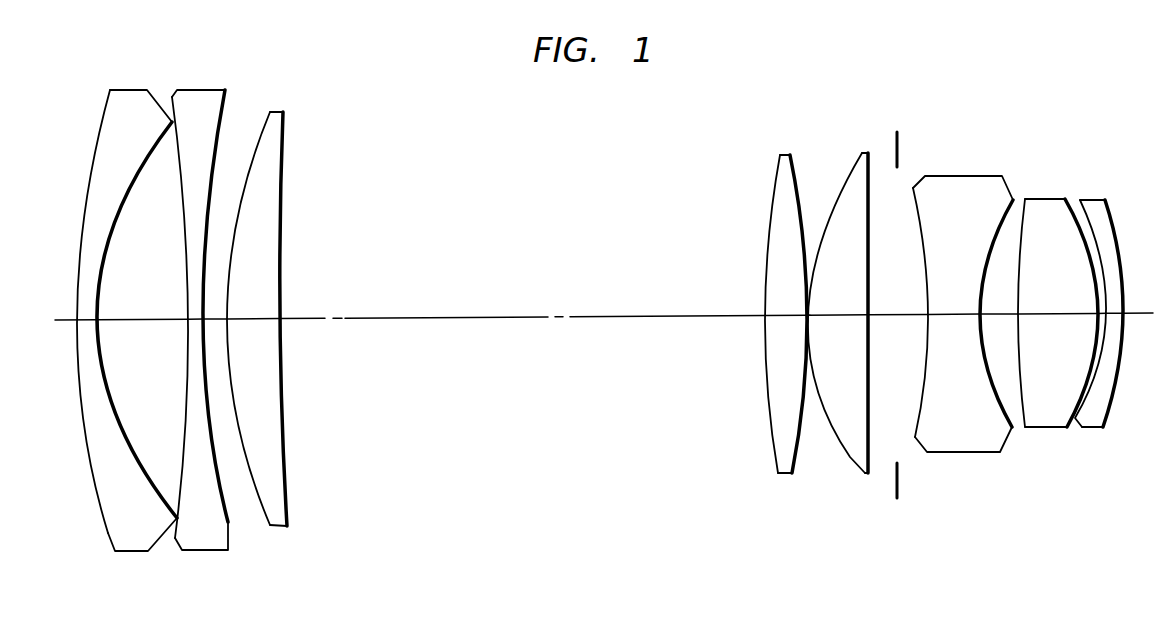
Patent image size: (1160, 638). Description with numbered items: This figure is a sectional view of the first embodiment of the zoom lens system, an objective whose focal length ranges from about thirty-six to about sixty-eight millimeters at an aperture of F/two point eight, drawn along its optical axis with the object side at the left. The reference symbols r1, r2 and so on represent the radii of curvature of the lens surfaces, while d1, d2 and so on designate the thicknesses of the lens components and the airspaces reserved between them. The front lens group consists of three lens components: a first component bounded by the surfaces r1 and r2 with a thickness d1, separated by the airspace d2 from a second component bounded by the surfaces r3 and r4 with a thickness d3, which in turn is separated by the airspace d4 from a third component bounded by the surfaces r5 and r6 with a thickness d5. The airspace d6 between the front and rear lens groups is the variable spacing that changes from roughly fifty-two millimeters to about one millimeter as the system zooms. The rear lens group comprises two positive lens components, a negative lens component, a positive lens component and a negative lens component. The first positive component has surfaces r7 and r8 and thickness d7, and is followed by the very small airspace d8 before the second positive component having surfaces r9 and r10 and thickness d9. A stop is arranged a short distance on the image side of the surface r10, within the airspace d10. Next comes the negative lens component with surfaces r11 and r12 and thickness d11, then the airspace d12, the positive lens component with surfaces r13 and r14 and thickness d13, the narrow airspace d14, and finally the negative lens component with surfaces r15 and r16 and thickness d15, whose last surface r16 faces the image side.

The thickness of first lens component d1 is at (83, 318).
The airspace between first and second lens components d2 is at (140, 318).
The thickness of second lens component d3 is at (193, 325).
The airspace between second and third lens components d4 is at (217, 325).
The thickness of third lens component d5 is at (255, 318).
The variable airspace between front and rear lens groups d6 is at (503, 317).
The thickness of fourth lens component d7 is at (785, 313).
The airspace between fourth and fifth lens components d8 is at (808, 318).
The thickness of fifth lens component d9 is at (830, 313).
The airspace between fifth and sixth lens components d10 is at (892, 313).
The thickness of sixth lens component d11 is at (950, 312).
The airspace between sixth and seventh lens components d12 is at (998, 318).
The thickness of seventh lens component d13 is at (1048, 312).
The airspace between seventh and eighth lens components d14 is at (1097, 320).
The thickness of eighth lens component d15 is at (1118, 315).
The object side surface of first lens component r1 is at (108, 533).
The image side surface of first lens component r2 is at (158, 505).
The object side surface of second lens component r3 is at (182, 503).
The image side surface of second lens component r4 is at (228, 510).
The object side surface of third lens component r5 is at (262, 507).
The image side surface of third lens component r6 is at (287, 507).
The object side surface of fourth lens component r7 is at (773, 460).
The image side surface of fourth lens component r8 is at (800, 460).
The object side surface of fifth lens component r9 is at (850, 457).
The image side surface of fifth lens component r10 is at (873, 457).
The object side surface of sixth lens component r11 is at (923, 453).
The image side surface of sixth lens component r12 is at (992, 448).
The object side surface of seventh lens component r13 is at (1033, 430).
The image side surface of seventh lens component r14 is at (1058, 428).
The object side surface of eighth lens component r15 is at (1088, 427).
The image side surface of eighth lens component r16 is at (1113, 423).